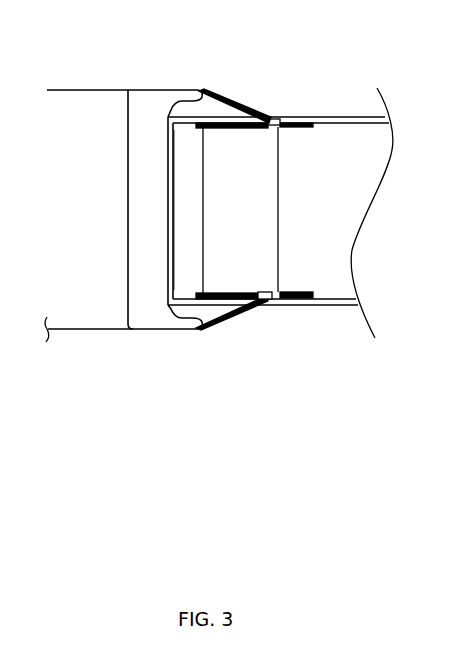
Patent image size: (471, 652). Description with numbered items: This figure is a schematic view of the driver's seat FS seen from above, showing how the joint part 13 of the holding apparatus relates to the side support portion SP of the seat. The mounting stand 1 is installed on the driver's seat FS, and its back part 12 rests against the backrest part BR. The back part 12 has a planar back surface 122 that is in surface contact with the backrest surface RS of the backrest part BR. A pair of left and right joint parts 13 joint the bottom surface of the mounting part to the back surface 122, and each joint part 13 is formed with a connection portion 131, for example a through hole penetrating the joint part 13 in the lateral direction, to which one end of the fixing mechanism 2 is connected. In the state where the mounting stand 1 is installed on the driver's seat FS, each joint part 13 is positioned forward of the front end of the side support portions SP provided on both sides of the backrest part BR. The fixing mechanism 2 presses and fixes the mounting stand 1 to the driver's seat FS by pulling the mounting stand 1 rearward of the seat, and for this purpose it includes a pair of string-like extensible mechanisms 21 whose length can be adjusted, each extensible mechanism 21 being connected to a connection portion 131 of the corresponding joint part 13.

The mounting stand 1 is at (229, 181).
The fixing mechanism 2 is at (123, 250).
The back part 12 is at (192, 185).
The joint part 13 is at (325, 299).
The extensible mechanism 21 is at (103, 333).
The back surface 122 is at (167, 175).
The connection portion 131 is at (258, 302).
The driver's seat FS is at (139, 82).
The side support portion SP is at (182, 102).
The backrest part BR is at (128, 232).
The backrest surface RS is at (172, 252).